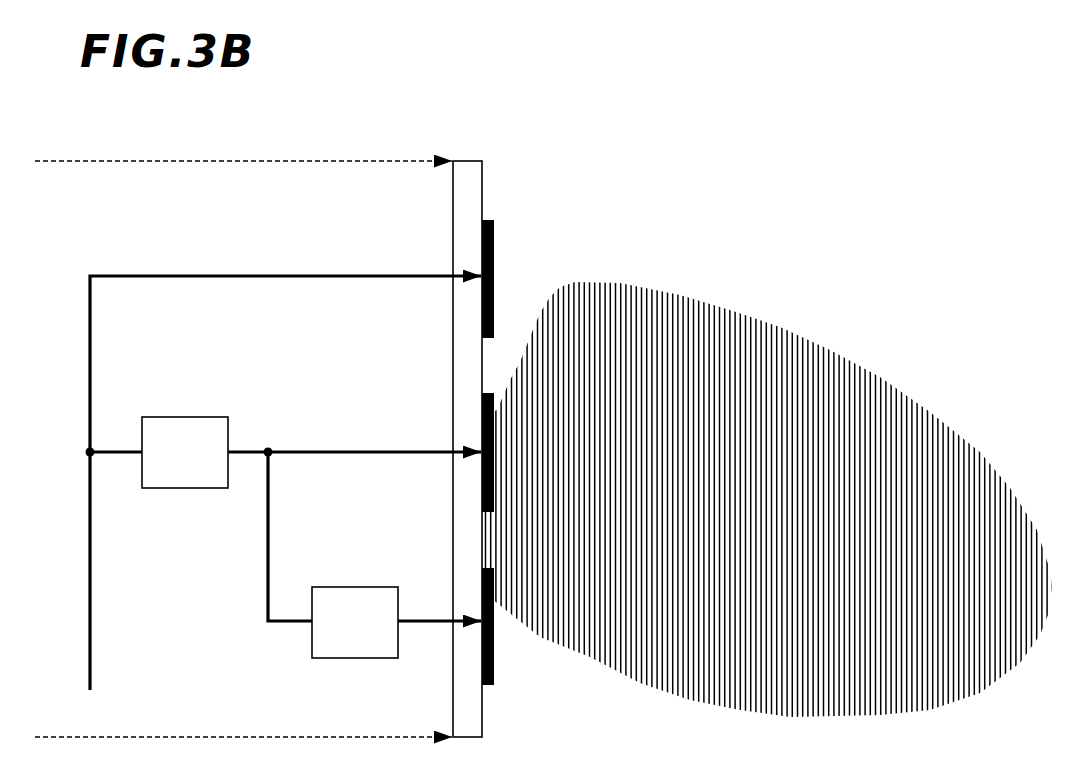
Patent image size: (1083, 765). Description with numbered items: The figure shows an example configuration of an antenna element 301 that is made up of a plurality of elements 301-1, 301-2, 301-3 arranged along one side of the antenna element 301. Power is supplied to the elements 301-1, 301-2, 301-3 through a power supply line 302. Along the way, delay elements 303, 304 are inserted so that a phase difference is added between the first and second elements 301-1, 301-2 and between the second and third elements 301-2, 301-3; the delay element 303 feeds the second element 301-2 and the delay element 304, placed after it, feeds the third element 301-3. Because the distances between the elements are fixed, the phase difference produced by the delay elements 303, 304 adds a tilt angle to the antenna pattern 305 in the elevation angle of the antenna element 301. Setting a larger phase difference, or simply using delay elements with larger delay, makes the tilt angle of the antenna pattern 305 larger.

The antenna element 301 is at (473, 161).
The element 301-1 is at (494, 274).
The element 301-2 is at (494, 432).
The element 301-3 is at (494, 588).
The power supply line 302 is at (91, 637).
The delay element 303 is at (216, 417).
The delay element 304 is at (376, 588).
The antenna pattern 305 is at (880, 378).